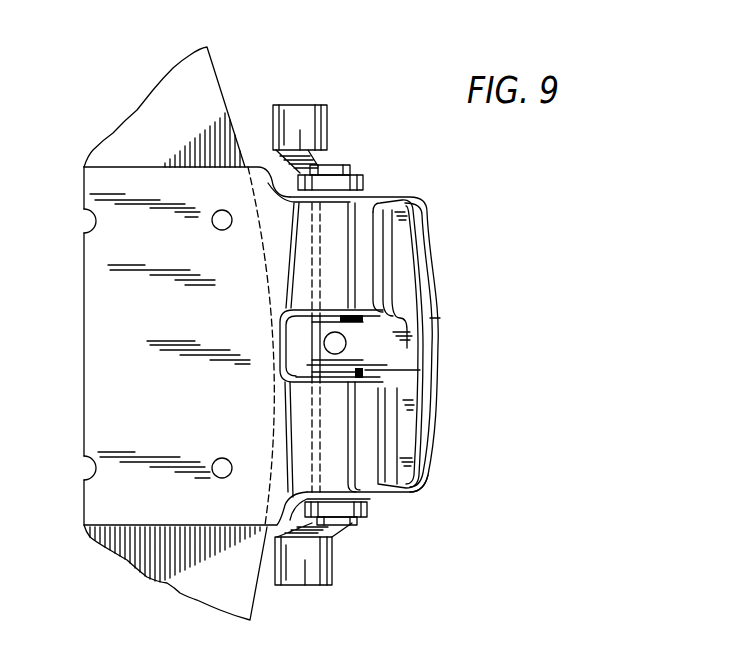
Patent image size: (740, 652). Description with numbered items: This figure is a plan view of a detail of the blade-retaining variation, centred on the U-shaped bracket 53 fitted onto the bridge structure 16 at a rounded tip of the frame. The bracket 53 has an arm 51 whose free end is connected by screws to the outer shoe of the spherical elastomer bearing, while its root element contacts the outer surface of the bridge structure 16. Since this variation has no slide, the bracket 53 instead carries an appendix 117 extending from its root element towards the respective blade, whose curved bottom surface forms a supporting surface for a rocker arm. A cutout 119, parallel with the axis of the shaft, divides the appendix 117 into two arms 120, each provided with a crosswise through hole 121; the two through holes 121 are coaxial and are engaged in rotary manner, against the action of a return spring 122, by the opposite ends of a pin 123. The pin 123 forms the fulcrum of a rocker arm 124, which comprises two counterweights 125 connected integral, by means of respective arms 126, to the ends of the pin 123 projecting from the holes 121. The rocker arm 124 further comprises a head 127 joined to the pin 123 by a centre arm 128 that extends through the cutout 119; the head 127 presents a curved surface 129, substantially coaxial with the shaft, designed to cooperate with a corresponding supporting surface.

The bridge structure 16 is at (260, 587).
The arm 51 is at (103, 337).
The U-shaped bracket 53 is at (205, 158).
The appendix 117 is at (394, 196).
The cutout 119 is at (362, 332).
The arms 120 is at (363, 213).
The through holes 121 is at (310, 257).
The return spring 122 is at (420, 370).
The pin 123 is at (345, 162).
The rocker arm 124 is at (427, 485).
The counterweights 125 is at (297, 120).
The arms 126 is at (340, 162).
The head 127 is at (412, 403).
The centre arm 128 is at (362, 358).
The curved surface 129 is at (431, 326).